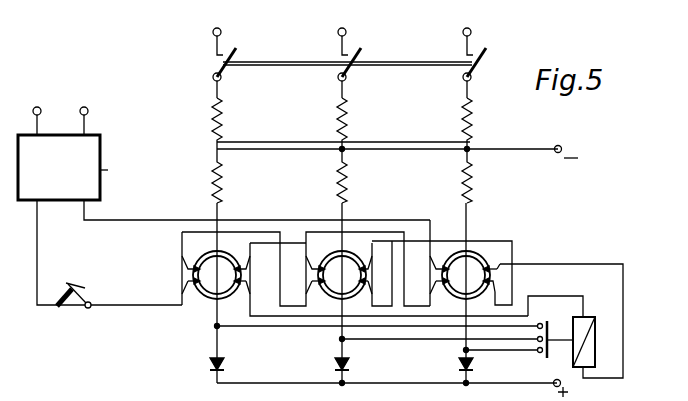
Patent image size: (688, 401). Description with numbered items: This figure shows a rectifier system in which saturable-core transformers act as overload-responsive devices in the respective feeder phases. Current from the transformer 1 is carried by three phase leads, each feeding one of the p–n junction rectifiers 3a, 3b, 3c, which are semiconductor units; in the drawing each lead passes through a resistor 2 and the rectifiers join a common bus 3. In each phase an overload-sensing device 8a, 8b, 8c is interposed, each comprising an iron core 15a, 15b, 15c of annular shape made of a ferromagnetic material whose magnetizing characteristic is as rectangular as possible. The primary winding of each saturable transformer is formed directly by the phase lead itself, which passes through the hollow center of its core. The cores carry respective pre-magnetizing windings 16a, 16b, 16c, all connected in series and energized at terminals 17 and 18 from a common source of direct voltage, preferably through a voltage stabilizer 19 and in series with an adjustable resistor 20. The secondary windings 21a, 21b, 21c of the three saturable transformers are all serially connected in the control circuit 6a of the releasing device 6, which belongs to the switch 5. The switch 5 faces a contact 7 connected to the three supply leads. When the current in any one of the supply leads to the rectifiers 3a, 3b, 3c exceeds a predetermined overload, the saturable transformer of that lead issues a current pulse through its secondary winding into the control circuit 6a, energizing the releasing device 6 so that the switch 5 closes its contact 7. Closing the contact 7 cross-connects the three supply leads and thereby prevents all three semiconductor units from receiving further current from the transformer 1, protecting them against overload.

The transformer 1 is at (190, 157).
The anode resistor 2 is at (351, 176).
The positive bus 3 is at (196, 377).
The p–n junction rectifier 3a is at (228, 365).
The p–n junction rectifier 3b is at (354, 365).
The p–n junction rectifier 3c is at (476, 365).
The switch 5 is at (563, 365).
The releasing device 6 is at (596, 340).
The control circuit 6a is at (586, 264).
The contact 7 is at (379, 329).
The overload-sensing device 8a is at (219, 284).
The overload-sensing device 8b is at (342, 284).
The overload-sensing device 8c is at (466, 284).
The iron core 15a is at (197, 297).
The iron core 15b is at (322, 297).
The iron core 15c is at (445, 297).
The pre-magnetizing winding 16a is at (176, 268).
The pre-magnetizing winding 16b is at (304, 269).
The pre-magnetizing winding 16c is at (428, 269).
The terminal 17 is at (38, 113).
The terminal 18 is at (84, 113).
The voltage stabilizer 19 is at (100, 167).
The adjustable resistor 20 is at (118, 288).
The secondary winding 21a is at (381, 279).
The secondary winding 21b is at (378, 275).
The secondary winding 21c is at (499, 273).